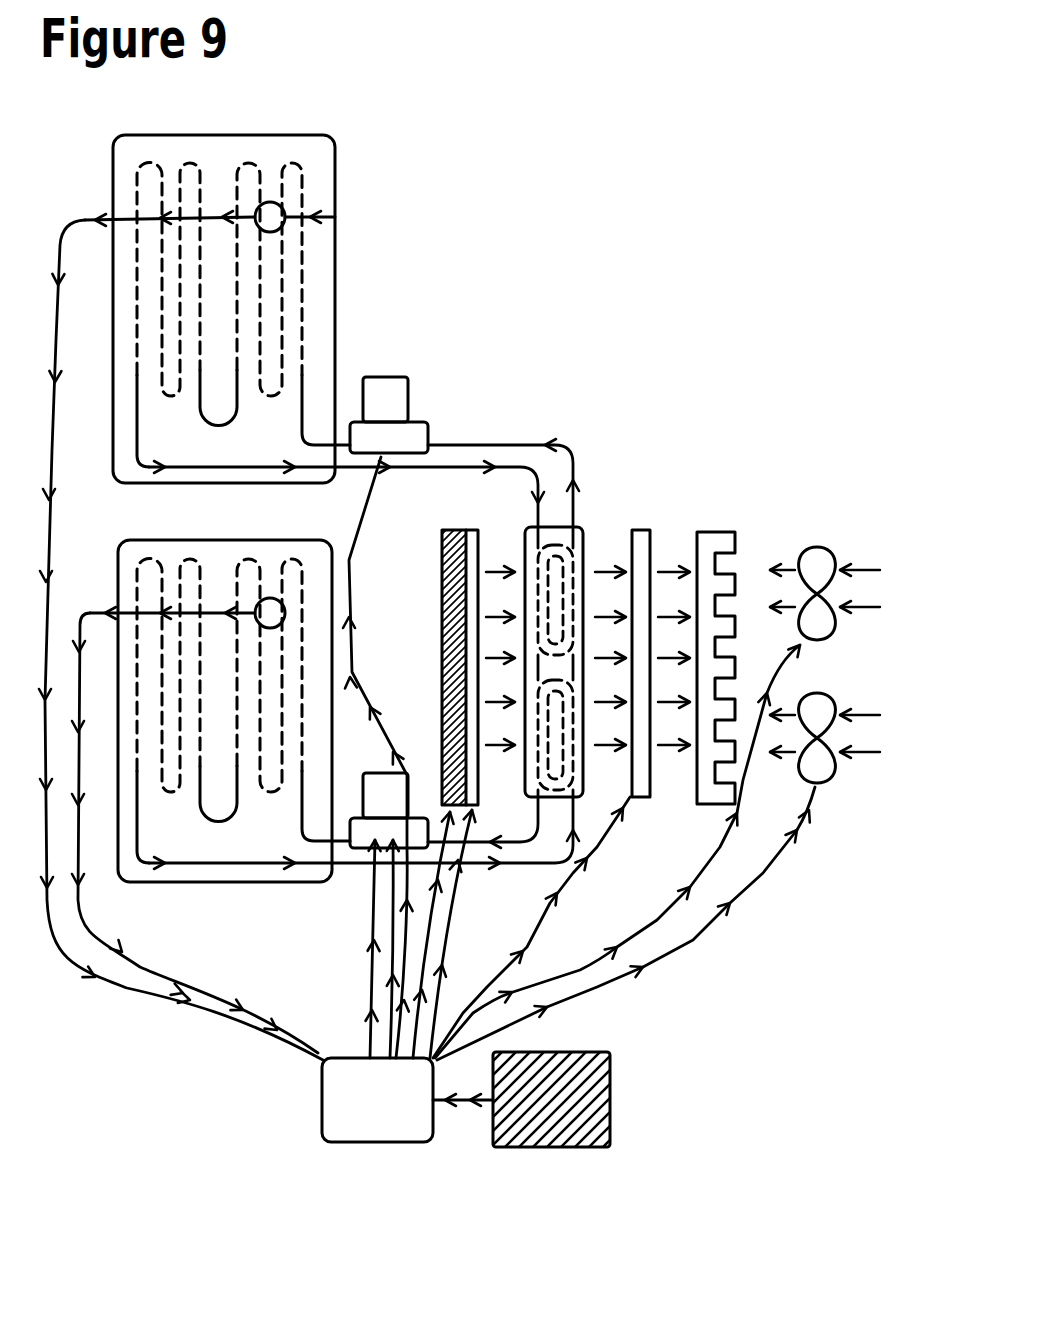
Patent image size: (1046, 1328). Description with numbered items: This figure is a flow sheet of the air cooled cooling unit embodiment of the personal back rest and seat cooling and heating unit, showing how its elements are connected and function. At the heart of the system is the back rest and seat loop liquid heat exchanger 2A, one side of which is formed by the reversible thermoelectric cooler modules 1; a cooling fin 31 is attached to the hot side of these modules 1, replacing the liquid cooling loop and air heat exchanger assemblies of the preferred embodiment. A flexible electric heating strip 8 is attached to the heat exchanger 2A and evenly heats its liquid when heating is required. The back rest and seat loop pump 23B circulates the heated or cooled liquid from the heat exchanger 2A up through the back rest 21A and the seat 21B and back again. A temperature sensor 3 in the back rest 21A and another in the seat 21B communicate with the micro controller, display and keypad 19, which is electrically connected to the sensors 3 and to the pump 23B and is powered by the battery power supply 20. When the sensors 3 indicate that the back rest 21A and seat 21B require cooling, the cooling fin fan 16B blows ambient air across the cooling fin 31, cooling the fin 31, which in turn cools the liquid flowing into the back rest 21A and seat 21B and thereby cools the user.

The reversible thermoelectric cooler (TEC) module 1 is at (475, 528).
The back rest and seat loop liquid heat exchanger 2A is at (585, 530).
The temperature sensor 3 is at (335, 217).
The electric heating strip 8 is at (442, 622).
The cooling fin fan 16B is at (815, 548).
The micro controller, display and keypad 19 is at (385, 1145).
The battery power supply 20 is at (570, 1147).
The back rest 21A is at (345, 148).
The seat 21B is at (205, 893).
The back rest and seat loop pump 23B is at (375, 440).
The cooling fin 31 is at (718, 525).